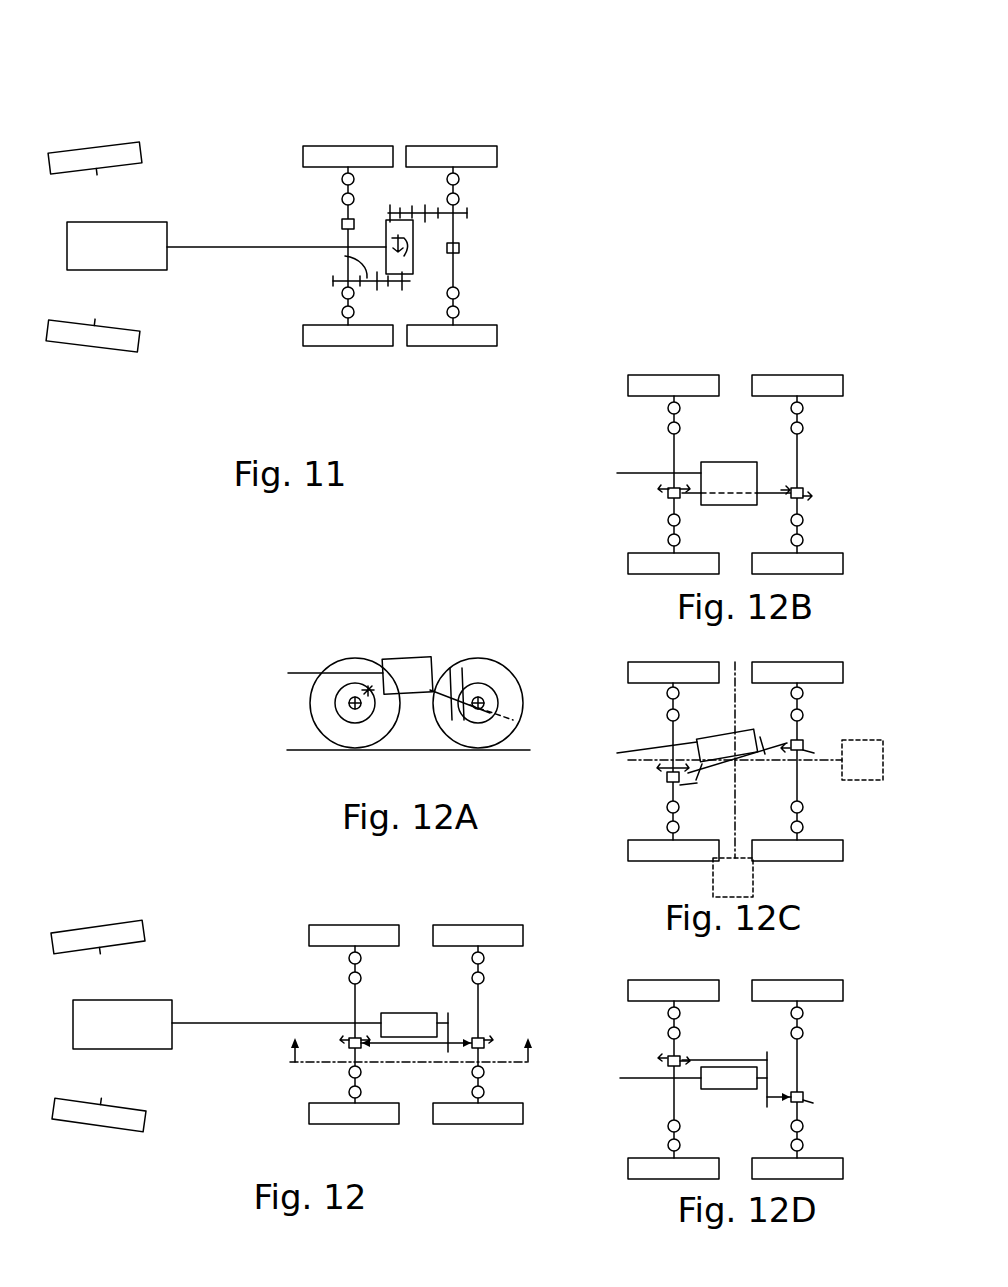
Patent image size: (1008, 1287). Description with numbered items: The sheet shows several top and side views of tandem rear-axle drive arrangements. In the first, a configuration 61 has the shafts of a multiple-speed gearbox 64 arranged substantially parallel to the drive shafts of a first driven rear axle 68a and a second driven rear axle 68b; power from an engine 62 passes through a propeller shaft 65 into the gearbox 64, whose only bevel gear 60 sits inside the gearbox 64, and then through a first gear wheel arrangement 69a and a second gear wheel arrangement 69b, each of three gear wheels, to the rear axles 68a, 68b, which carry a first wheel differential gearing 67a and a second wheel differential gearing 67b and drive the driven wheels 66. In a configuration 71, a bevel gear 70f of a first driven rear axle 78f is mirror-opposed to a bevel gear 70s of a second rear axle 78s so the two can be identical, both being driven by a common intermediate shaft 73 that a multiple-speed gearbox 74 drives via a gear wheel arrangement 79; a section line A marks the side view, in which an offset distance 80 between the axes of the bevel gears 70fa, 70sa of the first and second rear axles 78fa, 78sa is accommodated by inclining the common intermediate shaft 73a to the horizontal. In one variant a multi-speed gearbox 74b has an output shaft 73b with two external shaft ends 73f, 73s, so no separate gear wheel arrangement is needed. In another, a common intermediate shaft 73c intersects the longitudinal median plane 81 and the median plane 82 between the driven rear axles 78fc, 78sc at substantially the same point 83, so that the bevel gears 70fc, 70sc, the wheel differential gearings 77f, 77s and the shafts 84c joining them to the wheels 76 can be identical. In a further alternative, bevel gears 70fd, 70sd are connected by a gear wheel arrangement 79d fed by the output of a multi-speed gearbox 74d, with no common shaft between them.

In FIG. 11, the configuration 61 is at (200, 57).
In FIG. 11, the engine 62 is at (117, 265).
In FIG. 11, the propeller shaft 65 is at (210, 247).
In FIG. 11, the driven wheels 66 is at (445, 140).
In FIG. 11, the first wheel differential gearing 67a is at (463, 249).
In FIG. 11, the second wheel differential gearing 67b is at (346, 237).
In FIG. 11, the first driven rear axle 68a is at (342, 223).
In FIG. 11, the second driven rear axle 68b is at (455, 273).
In FIG. 11, the first gear wheel arrangement 69a is at (347, 253).
In FIG. 11, the second gear wheel arrangement 69b is at (405, 213).
In FIG. 11, the bevel gear 60 is at (413, 251).
In FIG. 11, the multiple-speed gearbox 64 is at (413, 268).
In FIG. 12, the configuration 71 is at (135, 871).
In FIG. 12, the common intermediate shaft 73 is at (423, 1047).
In FIG. 12, the multiple-speed gearbox 74 is at (407, 1022).
In FIG. 12, the gear wheel arrangement 79 is at (453, 1028).
In FIG. 12, the first driven rear axle 78f is at (355, 1007).
In FIG. 12, the second rear axle 78s is at (483, 1003).
In FIG. 12, the bevel gear 70f is at (362, 1050).
In FIG. 12, the bevel gear 70s is at (463, 1050).
In FIG. 12, the section line A- A is at (413, 1060).
In FIG. 12A, the bevel gear 70fa is at (367, 688).
In FIG. 12A, the bevel gear 70sa is at (467, 690).
In FIG. 12A, the common intermediate shaft 73a is at (400, 707).
In FIG. 12A, the first rear axle 78fa is at (337, 705).
In FIG. 12A, the second rear axle 78sa is at (487, 693).
In FIG. 12A, the offset distance 80 is at (520, 717).
In FIG. 12B, the output shaft 73b is at (722, 503).
In FIG. 12B, the external shaft end 73f is at (687, 490).
In FIG. 12B, the external shaft end 73s is at (768, 487).
In FIG. 12B, the multi-speed gearbox 74b is at (735, 462).
In FIG. 12C, the wheels 76 is at (673, 761).
In FIG. 12C, the bevel gear 70fc is at (663, 775).
In FIG. 12C, the bevel gear 70sc is at (800, 740).
In FIG. 12C, the common intermediate shaft 73c is at (713, 772).
In FIG. 12C, the wheel differential gearing 77f is at (672, 793).
In FIG. 12C, the wheel differential gearing 77s is at (787, 753).
In FIG. 12C, the driven rear axle 78fc is at (650, 870).
In FIG. 12C, the driven rear axle 78sc is at (810, 868).
In FIG. 12C, the longitudinal median plane 81 is at (862, 760).
In FIG. 12C, the median plane 82 is at (733, 877).
In FIG. 12C, the point 83 is at (733, 763).
In FIG. 12C, the shafts 84c is at (673, 732).
In FIG. 12D, the bevel gear 70fd is at (677, 1052).
In FIG. 12D, the bevel gear 70sd is at (787, 1103).
In FIG. 12D, the multi-speed gearbox 74d is at (717, 1083).
In FIG. 12D, the gear wheel arrangement 79d is at (768, 1077).